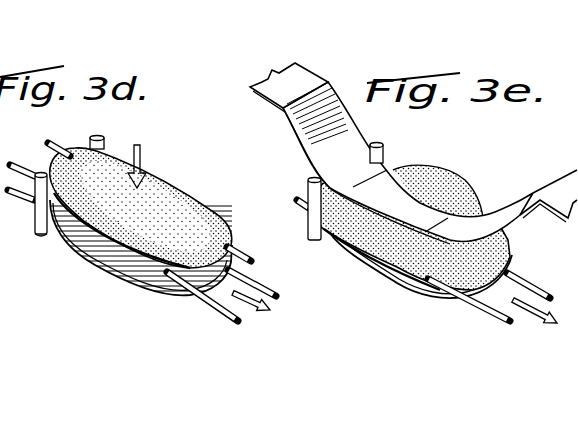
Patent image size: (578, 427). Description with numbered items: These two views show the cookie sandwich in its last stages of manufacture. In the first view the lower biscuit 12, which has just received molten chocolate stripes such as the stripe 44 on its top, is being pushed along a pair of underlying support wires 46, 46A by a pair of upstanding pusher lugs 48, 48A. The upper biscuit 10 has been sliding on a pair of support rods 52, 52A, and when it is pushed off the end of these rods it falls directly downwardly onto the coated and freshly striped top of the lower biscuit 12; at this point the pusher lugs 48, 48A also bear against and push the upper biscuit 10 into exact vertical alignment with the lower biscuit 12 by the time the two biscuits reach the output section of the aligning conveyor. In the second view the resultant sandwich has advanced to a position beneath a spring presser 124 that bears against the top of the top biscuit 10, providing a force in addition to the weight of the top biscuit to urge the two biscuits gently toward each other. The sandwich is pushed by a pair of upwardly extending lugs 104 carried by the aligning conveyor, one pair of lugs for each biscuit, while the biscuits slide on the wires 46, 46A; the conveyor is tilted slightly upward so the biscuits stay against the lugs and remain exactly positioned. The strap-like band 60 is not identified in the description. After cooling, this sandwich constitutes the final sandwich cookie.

In FIG. 3D, the upper biscuit 10 is at (180, 178).
In FIG. 3E, the upper biscuit 10 is at (448, 193).
In FIG. 3D, the lower biscuit 12 is at (113, 277).
In FIG. 3E, the lower biscuit 12 is at (393, 277).
In FIG. 3D, the molten chocolate stripe 44 is at (140, 300).
In FIG. 3E, the support wire 46 is at (477, 306).
In FIG. 3D, the support wire 46A is at (18, 229).
In FIG. 3E, the support wire 46A is at (517, 283).
In FIG. 3D, the pusher lug 48 is at (38, 173).
In FIG. 3D, the pusher lug 48A is at (98, 123).
In FIG. 3D, the support rod 52 is at (187, 297).
In FIG. 3D, the support rod 52A is at (247, 257).
In FIG. 3E, the strap 60 is at (276, 76).
In FIG. 3E, the lug 104 is at (310, 180).
In FIG. 3E, the spring presser 124 is at (340, 96).